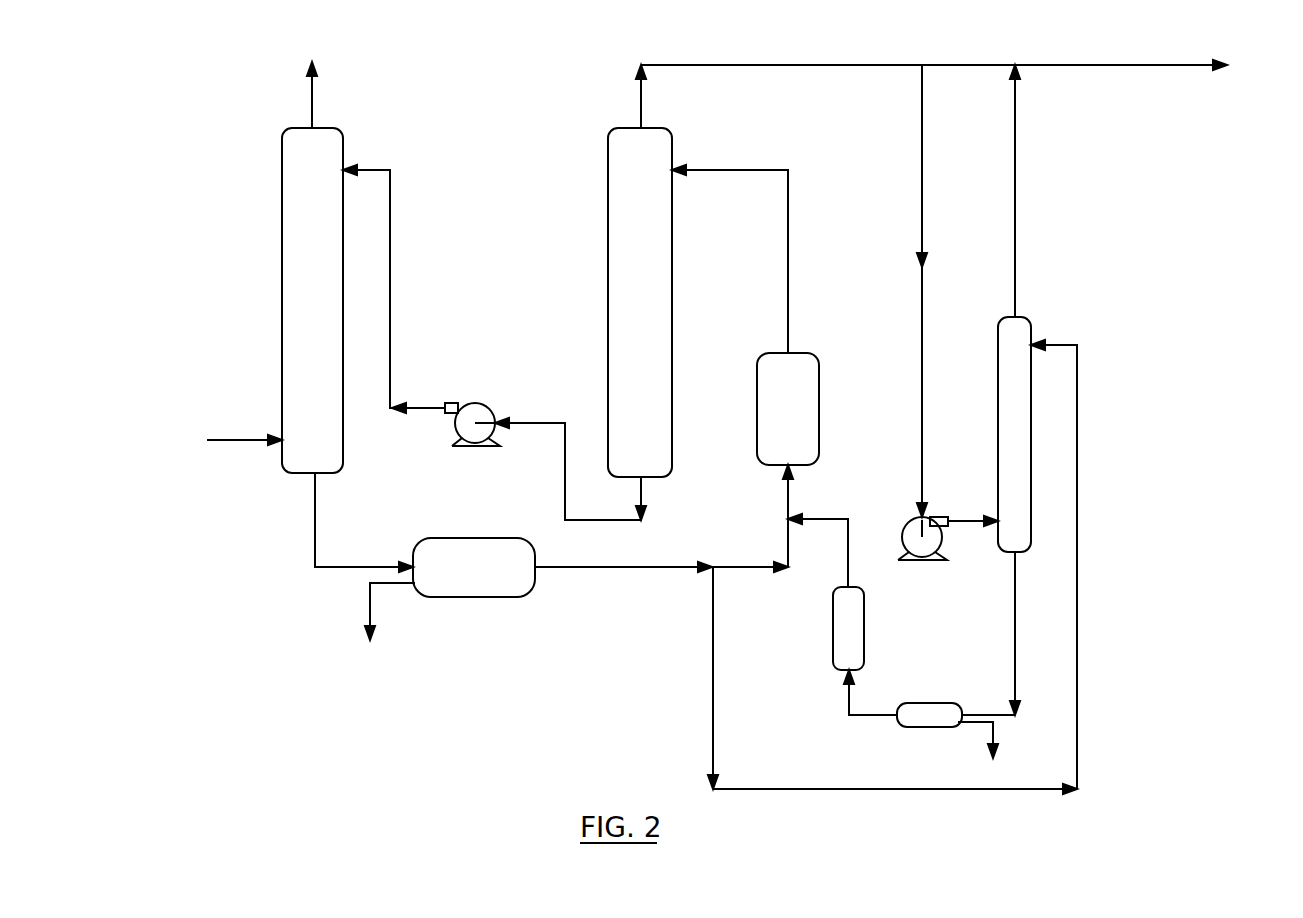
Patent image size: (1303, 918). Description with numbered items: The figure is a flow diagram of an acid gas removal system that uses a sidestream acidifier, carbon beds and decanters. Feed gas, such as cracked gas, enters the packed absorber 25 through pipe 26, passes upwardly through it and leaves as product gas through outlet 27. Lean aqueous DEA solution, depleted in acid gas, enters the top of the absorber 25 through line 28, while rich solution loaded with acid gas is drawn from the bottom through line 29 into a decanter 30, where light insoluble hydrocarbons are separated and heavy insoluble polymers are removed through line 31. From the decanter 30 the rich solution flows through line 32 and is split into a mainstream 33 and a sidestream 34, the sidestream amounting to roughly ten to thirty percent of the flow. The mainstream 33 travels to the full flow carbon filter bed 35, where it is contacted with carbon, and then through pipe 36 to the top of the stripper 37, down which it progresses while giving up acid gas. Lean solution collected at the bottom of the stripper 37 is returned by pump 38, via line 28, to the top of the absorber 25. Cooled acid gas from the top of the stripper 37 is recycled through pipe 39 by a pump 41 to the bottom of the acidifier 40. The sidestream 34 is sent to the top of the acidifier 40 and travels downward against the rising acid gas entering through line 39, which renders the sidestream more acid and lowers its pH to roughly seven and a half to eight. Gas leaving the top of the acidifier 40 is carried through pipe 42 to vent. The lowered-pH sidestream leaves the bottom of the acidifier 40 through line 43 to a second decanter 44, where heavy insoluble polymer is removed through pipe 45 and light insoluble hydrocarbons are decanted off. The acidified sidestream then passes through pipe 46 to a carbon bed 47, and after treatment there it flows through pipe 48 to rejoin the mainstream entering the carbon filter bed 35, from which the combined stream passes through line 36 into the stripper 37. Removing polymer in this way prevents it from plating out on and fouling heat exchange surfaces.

The absorber 25 is at (295, 300).
The pipe 26 is at (252, 438).
The outlet 27 is at (313, 108).
The line 28 is at (391, 210).
The line 29 is at (316, 532).
The decanter 30 is at (455, 581).
The line 31 is at (365, 615).
The line 32 is at (625, 570).
The mainstream 33 is at (760, 565).
The sidestream 34 is at (712, 680).
The full flow carbon filter bed 35 is at (772, 425).
The pipe 36 is at (765, 168).
The stripper 37 is at (622, 299).
The pump 38 is at (473, 445).
The pipe 39 is at (765, 65).
The acidifier 40 is at (998, 392).
The pump 41 is at (925, 565).
The pipe 42 is at (1017, 197).
The line 43 is at (1017, 603).
The decanter 44 is at (920, 702).
The pipe 45 is at (985, 745).
The pipe 46 is at (843, 708).
The carbon bed 47 is at (832, 628).
The pipe 48 is at (840, 520).